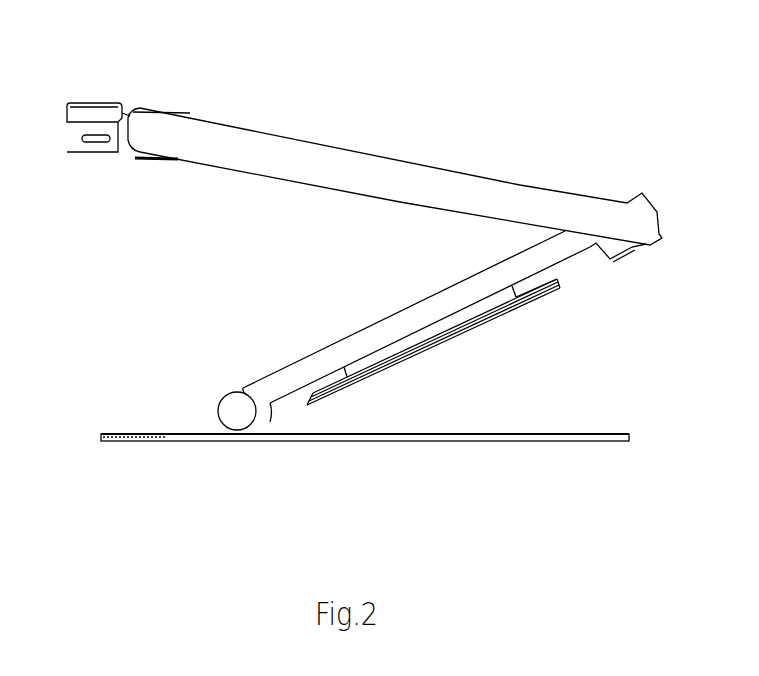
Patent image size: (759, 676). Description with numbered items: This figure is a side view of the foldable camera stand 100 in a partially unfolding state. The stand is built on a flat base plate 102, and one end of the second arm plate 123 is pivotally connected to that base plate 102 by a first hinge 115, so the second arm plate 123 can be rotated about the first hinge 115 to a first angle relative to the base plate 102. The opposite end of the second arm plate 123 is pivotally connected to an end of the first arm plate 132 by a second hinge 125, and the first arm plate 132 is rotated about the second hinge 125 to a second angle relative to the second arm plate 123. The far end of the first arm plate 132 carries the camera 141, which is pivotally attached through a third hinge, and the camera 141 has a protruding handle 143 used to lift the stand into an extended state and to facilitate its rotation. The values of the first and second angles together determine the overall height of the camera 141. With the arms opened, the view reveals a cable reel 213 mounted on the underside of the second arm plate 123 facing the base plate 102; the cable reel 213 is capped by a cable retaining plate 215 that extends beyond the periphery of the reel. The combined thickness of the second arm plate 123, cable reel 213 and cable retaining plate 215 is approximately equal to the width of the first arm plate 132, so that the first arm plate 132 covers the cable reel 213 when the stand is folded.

The foldable camera stand 100 is at (520, 110).
The base plate 102 is at (393, 441).
The first hinge 115 is at (237, 420).
The second arm plate 123 is at (347, 347).
The second hinge 125 is at (612, 258).
The first arm plate 132 is at (360, 170).
The camera 141 is at (92, 148).
The protruding handle 143 is at (100, 112).
The cable reel 213 is at (436, 332).
The cable retaining plate 215 is at (541, 301).